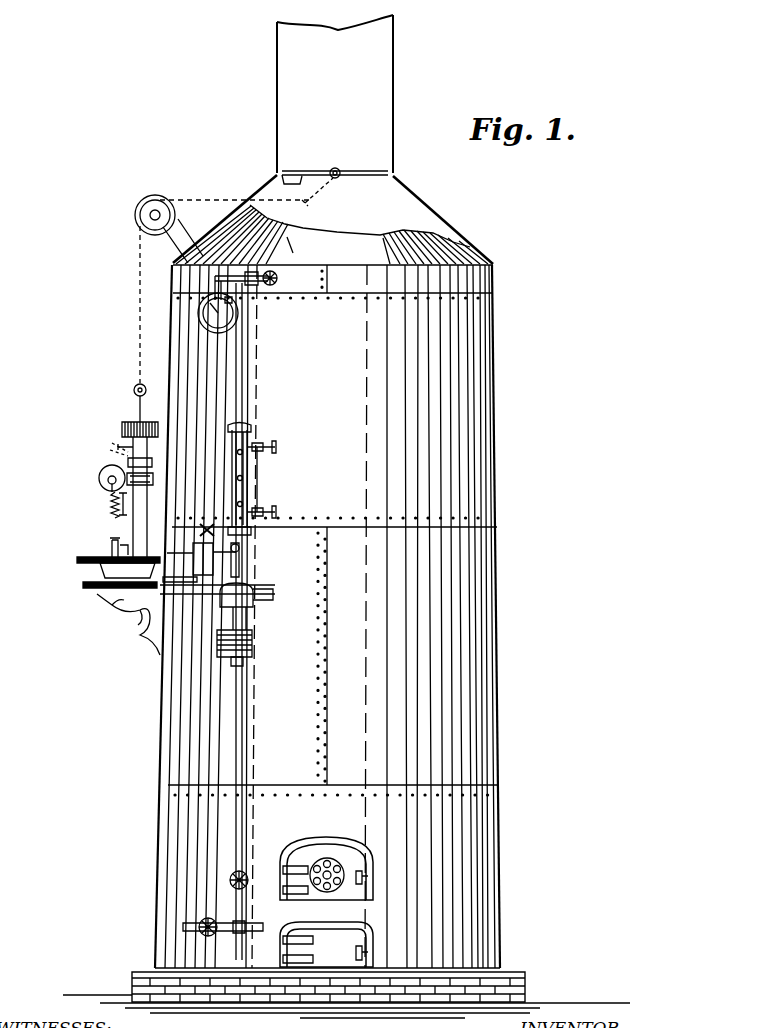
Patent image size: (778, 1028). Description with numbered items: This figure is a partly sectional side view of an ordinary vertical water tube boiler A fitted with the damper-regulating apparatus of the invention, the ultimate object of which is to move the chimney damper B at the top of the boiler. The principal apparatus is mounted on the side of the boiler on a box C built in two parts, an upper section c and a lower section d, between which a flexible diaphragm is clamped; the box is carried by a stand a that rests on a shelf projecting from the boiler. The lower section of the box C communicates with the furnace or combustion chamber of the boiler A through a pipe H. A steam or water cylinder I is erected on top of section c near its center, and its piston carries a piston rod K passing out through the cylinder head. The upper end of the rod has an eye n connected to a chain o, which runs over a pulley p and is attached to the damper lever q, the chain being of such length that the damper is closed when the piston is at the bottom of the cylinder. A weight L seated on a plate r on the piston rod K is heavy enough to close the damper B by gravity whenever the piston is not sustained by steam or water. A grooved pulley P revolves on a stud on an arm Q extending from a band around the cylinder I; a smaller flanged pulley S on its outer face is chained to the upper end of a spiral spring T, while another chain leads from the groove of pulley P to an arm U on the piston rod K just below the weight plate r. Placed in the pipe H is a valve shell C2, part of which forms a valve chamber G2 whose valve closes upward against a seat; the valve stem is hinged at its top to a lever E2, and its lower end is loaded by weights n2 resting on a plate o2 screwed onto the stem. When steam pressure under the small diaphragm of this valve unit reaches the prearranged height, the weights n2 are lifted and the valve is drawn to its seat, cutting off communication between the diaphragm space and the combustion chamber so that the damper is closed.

The vertical water tube boiler A is at (327, 616).
The chimney damper B is at (341, 170).
The damper lever q is at (325, 195).
The pulley p is at (160, 196).
The chain o is at (211, 291).
The piston rod K is at (133, 400).
The eye n is at (146, 380).
The weight L is at (141, 420).
The steam or water cylinder I is at (142, 497).
The plate r is at (148, 447).
The arm U is at (107, 440).
The arm Q is at (108, 467).
The grooved pulley P is at (99, 482).
The flanged pulley S is at (103, 504).
The spiral spring T is at (123, 503).
The box C is at (87, 556).
The upper section of box c is at (111, 542).
The lower section of box d is at (83, 584).
The stand a is at (110, 603).
The valve shell C2 is at (212, 594).
The lever E2 is at (248, 530).
The pipe H is at (251, 588).
The valve chamber G2 is at (249, 594).
The weights n2 is at (253, 643).
The plate o2 is at (247, 662).